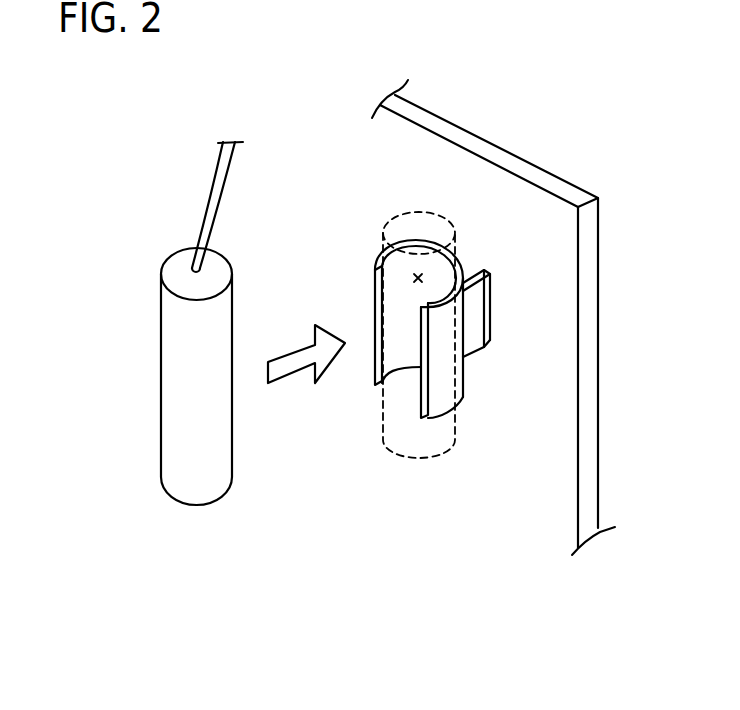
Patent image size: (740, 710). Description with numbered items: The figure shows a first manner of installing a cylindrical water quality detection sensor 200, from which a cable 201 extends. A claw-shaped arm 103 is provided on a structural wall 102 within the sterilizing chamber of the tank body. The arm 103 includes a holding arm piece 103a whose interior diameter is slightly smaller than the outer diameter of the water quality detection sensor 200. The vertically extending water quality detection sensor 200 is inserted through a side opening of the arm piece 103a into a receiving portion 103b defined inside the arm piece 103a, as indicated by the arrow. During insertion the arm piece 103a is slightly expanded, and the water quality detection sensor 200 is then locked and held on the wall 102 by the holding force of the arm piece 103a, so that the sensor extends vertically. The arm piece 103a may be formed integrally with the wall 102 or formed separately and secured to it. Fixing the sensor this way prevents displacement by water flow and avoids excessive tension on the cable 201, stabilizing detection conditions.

The structural wall 102 is at (553, 175).
The claw-shaped arm 103 is at (467, 337).
The holding arm piece 103a is at (445, 372).
The receiving portion 103b is at (420, 278).
The water quality detection sensor 200 is at (160, 318).
The cable 201 is at (212, 217).